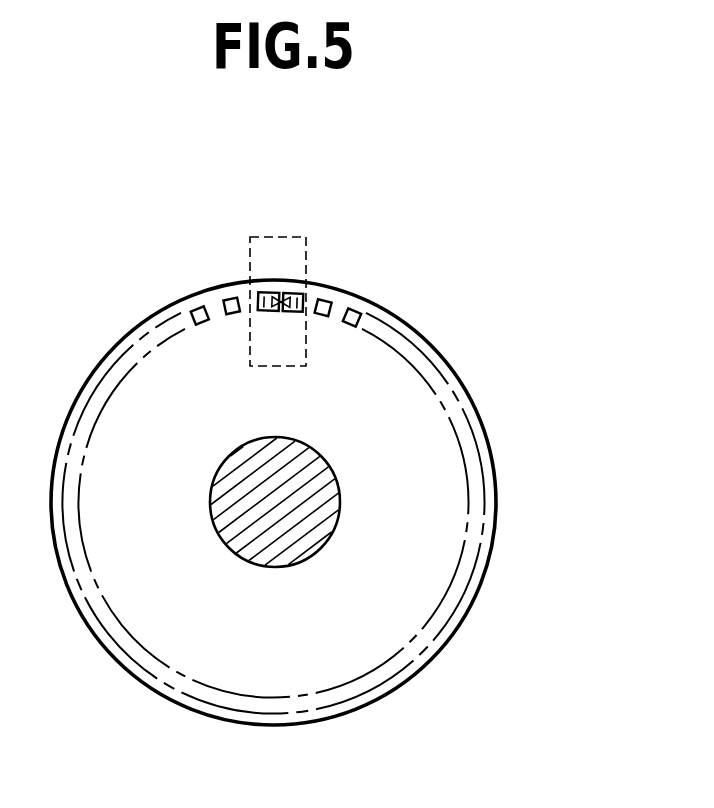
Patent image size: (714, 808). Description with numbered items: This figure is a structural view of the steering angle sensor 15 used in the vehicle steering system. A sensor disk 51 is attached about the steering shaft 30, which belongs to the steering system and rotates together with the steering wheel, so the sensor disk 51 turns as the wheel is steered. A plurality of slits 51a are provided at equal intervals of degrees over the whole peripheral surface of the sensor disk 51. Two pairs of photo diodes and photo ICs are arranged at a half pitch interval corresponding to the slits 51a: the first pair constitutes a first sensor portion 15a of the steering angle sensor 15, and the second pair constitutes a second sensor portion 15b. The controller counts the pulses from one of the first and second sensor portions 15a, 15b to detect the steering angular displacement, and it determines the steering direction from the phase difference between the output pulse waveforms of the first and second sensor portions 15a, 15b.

The steering angle sensor 15 is at (361, 251).
The first sensor portion 15a is at (266, 293).
The second sensor portion 15b is at (303, 293).
The steering shaft 30 is at (323, 480).
The sensor disk 51 is at (445, 358).
The slits 51a is at (354, 313).